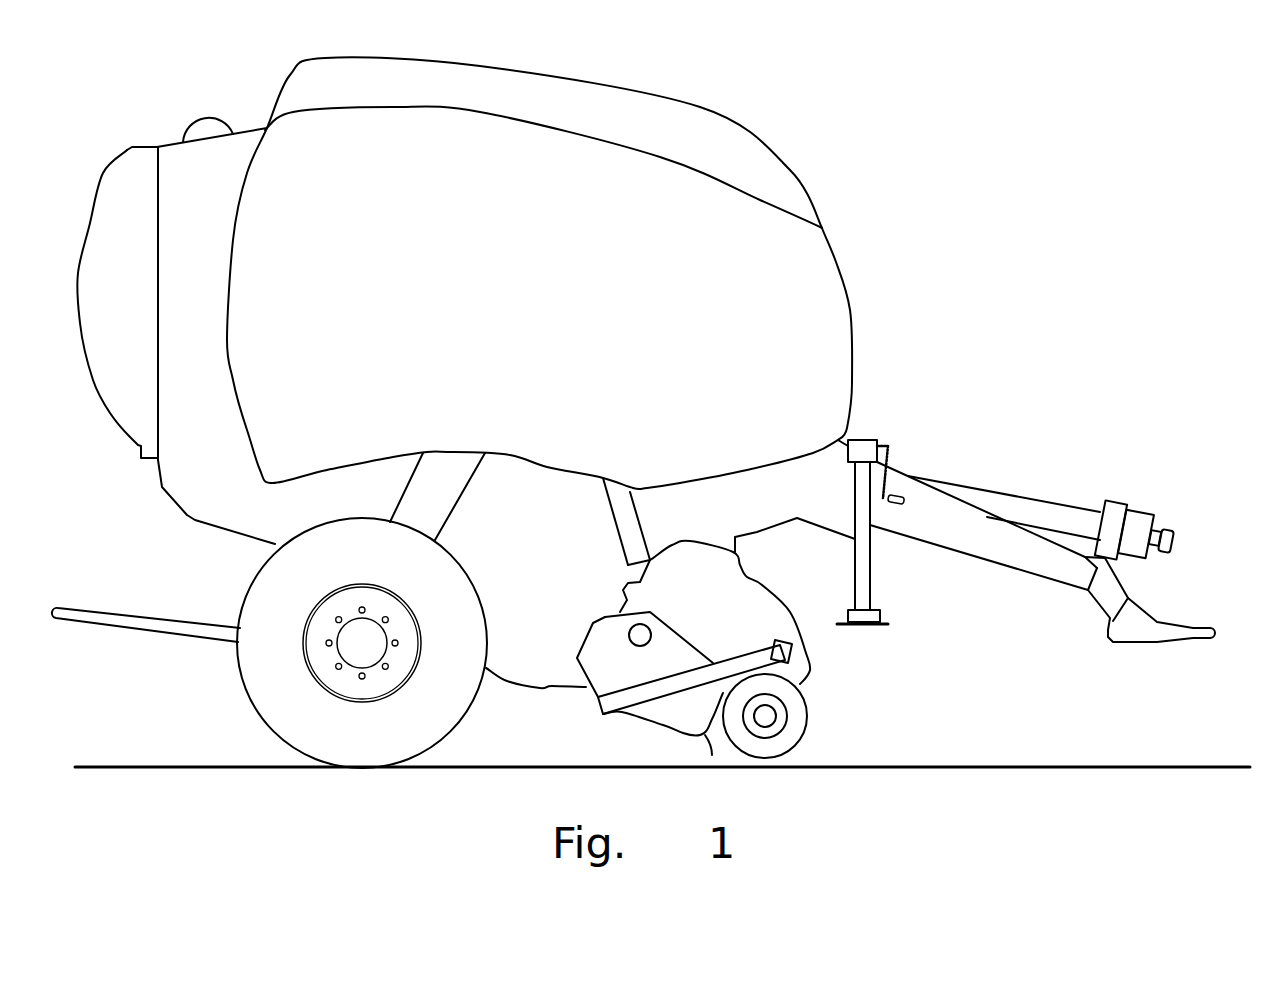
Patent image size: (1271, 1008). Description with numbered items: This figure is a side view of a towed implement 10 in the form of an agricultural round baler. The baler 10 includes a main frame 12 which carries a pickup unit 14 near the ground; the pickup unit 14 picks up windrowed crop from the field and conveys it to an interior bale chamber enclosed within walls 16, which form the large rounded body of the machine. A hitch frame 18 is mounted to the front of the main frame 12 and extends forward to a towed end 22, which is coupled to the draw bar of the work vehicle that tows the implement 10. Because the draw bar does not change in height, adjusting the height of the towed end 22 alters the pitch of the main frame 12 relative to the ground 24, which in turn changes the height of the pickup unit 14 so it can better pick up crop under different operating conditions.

The implement 10 is at (805, 177).
The main frame 12 is at (655, 500).
The pickup unit 14 is at (818, 672).
The walls 16 is at (212, 192).
The hitch frame 18 is at (975, 558).
The towed end 22 is at (1170, 640).
The ground 24 is at (972, 767).